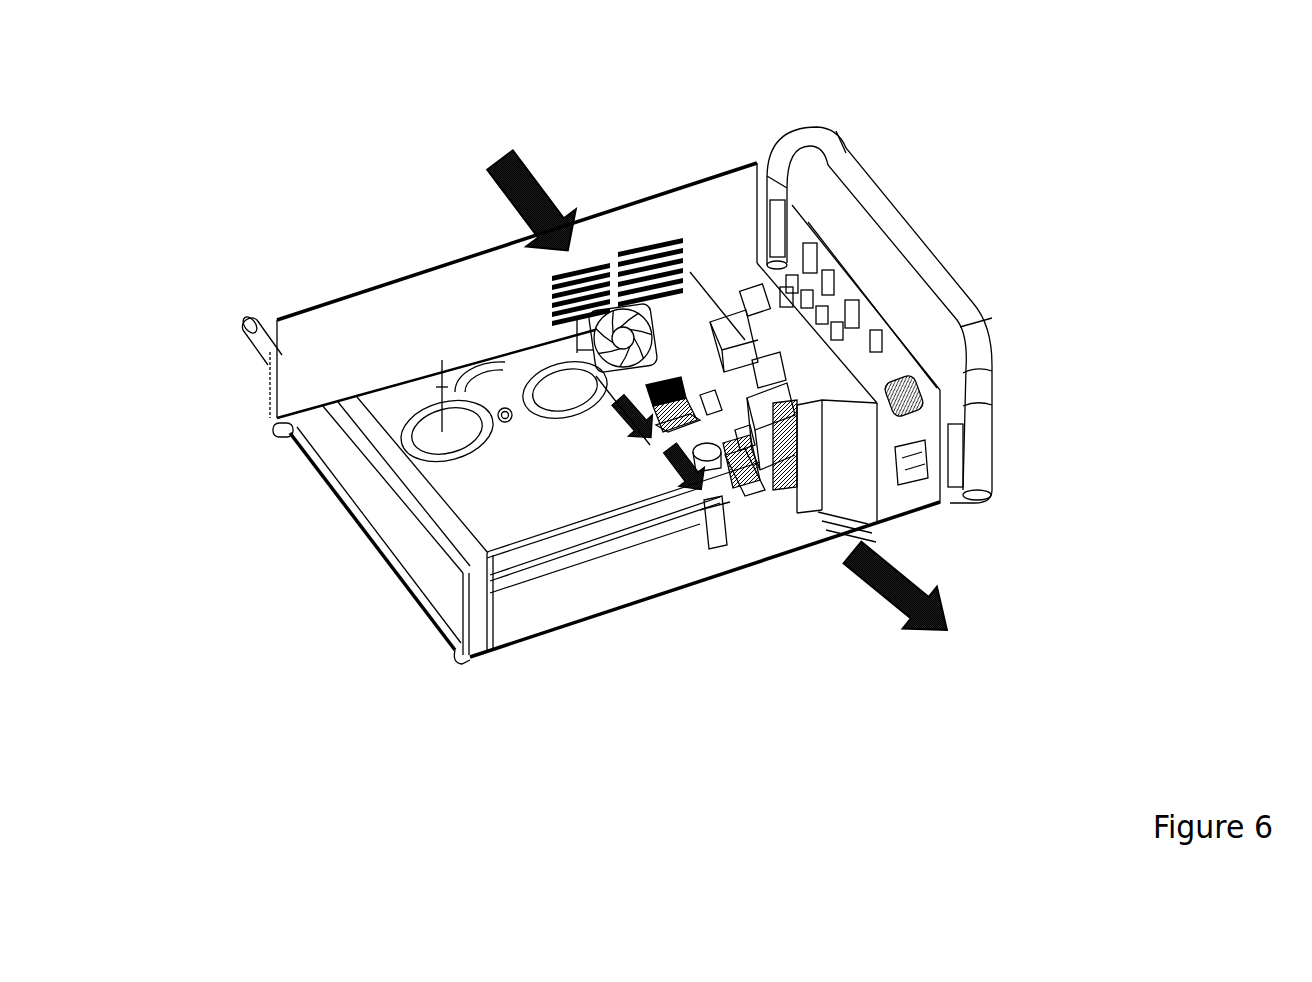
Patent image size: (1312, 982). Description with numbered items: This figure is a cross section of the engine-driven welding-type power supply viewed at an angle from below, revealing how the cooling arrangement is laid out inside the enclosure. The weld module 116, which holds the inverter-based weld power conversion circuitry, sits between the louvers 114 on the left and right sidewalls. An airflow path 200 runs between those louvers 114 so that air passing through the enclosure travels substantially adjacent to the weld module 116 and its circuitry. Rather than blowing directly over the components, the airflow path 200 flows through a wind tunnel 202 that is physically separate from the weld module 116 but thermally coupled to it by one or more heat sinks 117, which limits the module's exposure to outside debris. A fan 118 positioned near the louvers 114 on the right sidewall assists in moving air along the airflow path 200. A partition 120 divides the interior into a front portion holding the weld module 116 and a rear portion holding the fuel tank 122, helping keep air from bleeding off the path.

The louvers 114 is at (533, 288).
The weld module 116 is at (733, 345).
The heat sinks 117 is at (665, 452).
The fan 118 is at (590, 347).
The partition 120 is at (680, 497).
The fuel tank 122 is at (455, 475).
The airflow path 200 is at (488, 170).
The wind tunnel 202 is at (627, 383).